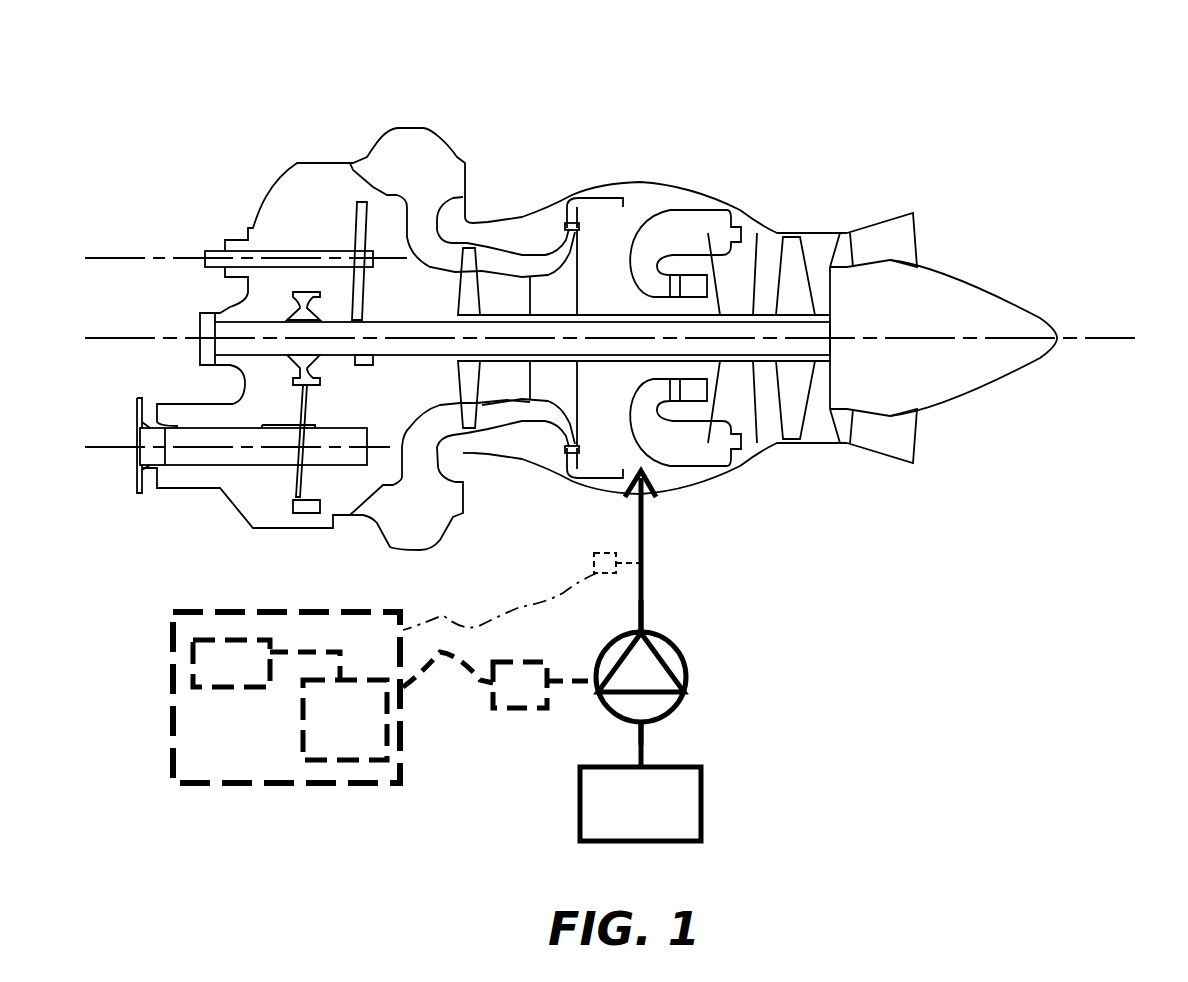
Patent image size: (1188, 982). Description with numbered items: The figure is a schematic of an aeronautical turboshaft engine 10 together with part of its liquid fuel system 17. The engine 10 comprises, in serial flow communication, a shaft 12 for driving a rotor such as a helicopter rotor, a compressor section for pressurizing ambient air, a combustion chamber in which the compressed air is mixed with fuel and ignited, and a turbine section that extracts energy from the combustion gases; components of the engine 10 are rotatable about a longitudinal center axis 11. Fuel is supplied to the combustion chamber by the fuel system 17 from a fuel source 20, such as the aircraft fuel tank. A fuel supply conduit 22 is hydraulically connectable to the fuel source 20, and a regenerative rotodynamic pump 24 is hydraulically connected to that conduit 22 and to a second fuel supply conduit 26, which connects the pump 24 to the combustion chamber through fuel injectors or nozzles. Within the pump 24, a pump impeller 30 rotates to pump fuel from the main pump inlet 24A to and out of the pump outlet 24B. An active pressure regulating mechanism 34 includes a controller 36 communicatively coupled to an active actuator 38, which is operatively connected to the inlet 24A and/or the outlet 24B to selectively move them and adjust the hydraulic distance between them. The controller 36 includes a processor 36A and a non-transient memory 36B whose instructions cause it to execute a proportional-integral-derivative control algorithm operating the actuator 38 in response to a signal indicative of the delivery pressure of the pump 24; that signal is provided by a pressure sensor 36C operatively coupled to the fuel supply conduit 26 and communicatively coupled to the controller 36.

The engine 10 is at (893, 137).
The longitudinal center axis 11 is at (1112, 338).
The shaft 12 is at (190, 458).
The liquid fuel system 17 is at (853, 609).
The fuel source 20 is at (656, 818).
The fuel supply conduit 22 is at (647, 747).
The regenerative rotodynamic pump 24 is at (673, 640).
The main pump inlet 24A is at (633, 730).
The pump outlet 24B is at (637, 633).
The fuel supply conduit 26 is at (640, 520).
The pump impeller 30 is at (678, 708).
The active pressure regulating mechanism 34 is at (153, 612).
The controller 36 is at (232, 766).
The processor 36A is at (254, 675).
The non-transient memory 36B is at (368, 730).
The pressure sensor 36C is at (593, 563).
The active actuator 38 is at (533, 700).